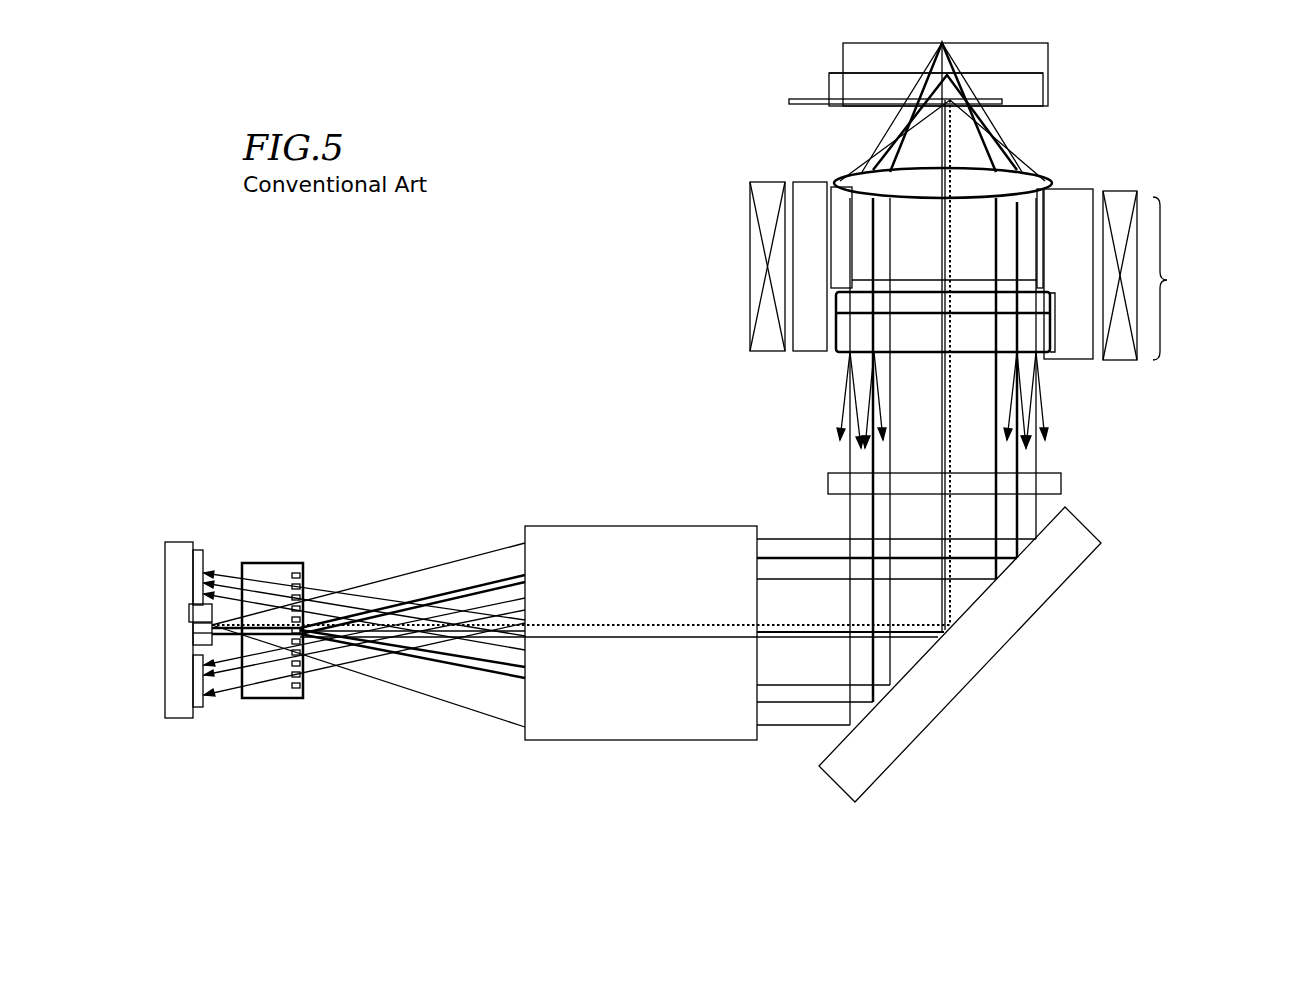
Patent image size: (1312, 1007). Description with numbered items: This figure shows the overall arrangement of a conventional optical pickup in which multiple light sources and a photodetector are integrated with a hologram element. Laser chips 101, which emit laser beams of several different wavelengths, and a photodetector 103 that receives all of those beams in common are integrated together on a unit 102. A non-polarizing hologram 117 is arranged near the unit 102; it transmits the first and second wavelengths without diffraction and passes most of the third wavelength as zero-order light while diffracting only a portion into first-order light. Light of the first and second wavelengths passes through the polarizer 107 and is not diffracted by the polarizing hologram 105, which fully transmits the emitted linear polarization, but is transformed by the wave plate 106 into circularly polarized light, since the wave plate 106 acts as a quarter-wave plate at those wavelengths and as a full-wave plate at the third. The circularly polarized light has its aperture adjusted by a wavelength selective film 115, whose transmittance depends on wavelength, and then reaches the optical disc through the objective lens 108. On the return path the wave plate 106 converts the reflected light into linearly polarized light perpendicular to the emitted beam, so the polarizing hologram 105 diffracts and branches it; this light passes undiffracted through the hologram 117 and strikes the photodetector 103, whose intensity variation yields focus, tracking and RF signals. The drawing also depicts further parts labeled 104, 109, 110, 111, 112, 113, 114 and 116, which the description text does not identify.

The laser chips 101 is at (212, 633).
The unit 102 is at (182, 542).
The photodetector 103 is at (198, 593).
The beam splitter block 104 is at (610, 740).
The polarizing hologram 105 is at (858, 352).
The wave plate 106 is at (855, 305).
The polarizer 107 is at (1050, 322).
The objective lens 108 is at (1027, 180).
The optical disk 109 is at (1010, 75).
The recording layer 110 is at (887, 45).
The reflecting mirror 111 is at (969, 657).
The magnet 112 is at (805, 205).
The magnetic circuit 113 is at (1168, 280).
The cover layer 114 is at (789, 99).
The wavelength selective film 115 is at (858, 280).
The quarter-wave plate 116 is at (1061, 483).
The non-polarizing hologram 117 is at (272, 573).